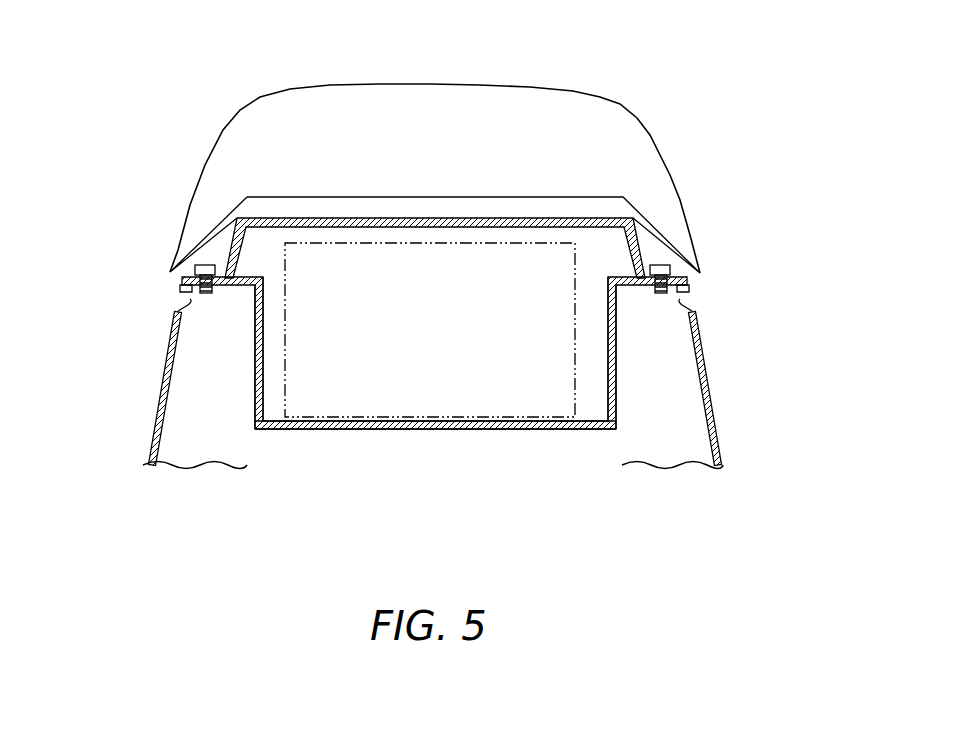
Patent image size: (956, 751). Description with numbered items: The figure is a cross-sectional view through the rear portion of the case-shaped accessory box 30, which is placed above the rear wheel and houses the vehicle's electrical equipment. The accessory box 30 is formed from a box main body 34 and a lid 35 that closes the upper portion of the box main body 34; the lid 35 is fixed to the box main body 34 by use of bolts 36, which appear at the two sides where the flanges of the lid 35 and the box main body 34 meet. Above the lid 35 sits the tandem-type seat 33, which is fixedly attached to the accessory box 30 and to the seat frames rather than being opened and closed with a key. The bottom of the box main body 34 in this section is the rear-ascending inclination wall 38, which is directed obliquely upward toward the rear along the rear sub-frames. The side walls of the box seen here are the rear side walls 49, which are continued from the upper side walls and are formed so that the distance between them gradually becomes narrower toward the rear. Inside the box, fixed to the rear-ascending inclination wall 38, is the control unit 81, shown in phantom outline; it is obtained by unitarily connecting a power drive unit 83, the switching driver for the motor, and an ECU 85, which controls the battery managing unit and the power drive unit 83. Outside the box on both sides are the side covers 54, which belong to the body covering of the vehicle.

The seat 33 is at (330, 88).
The power drive unit (PDU) 83 is at (439, 214).
The ECU 85 is at (439, 214).
The control unit 81 is at (470, 273).
The accessory box 30 is at (518, 299).
The lid 35 is at (641, 250).
The box main body 34 is at (615, 342).
The bolts 36 is at (207, 266).
The rear-ascending inclination wall 38 is at (423, 430).
The rear side walls 49 is at (257, 383).
The side covers 54 is at (168, 335).